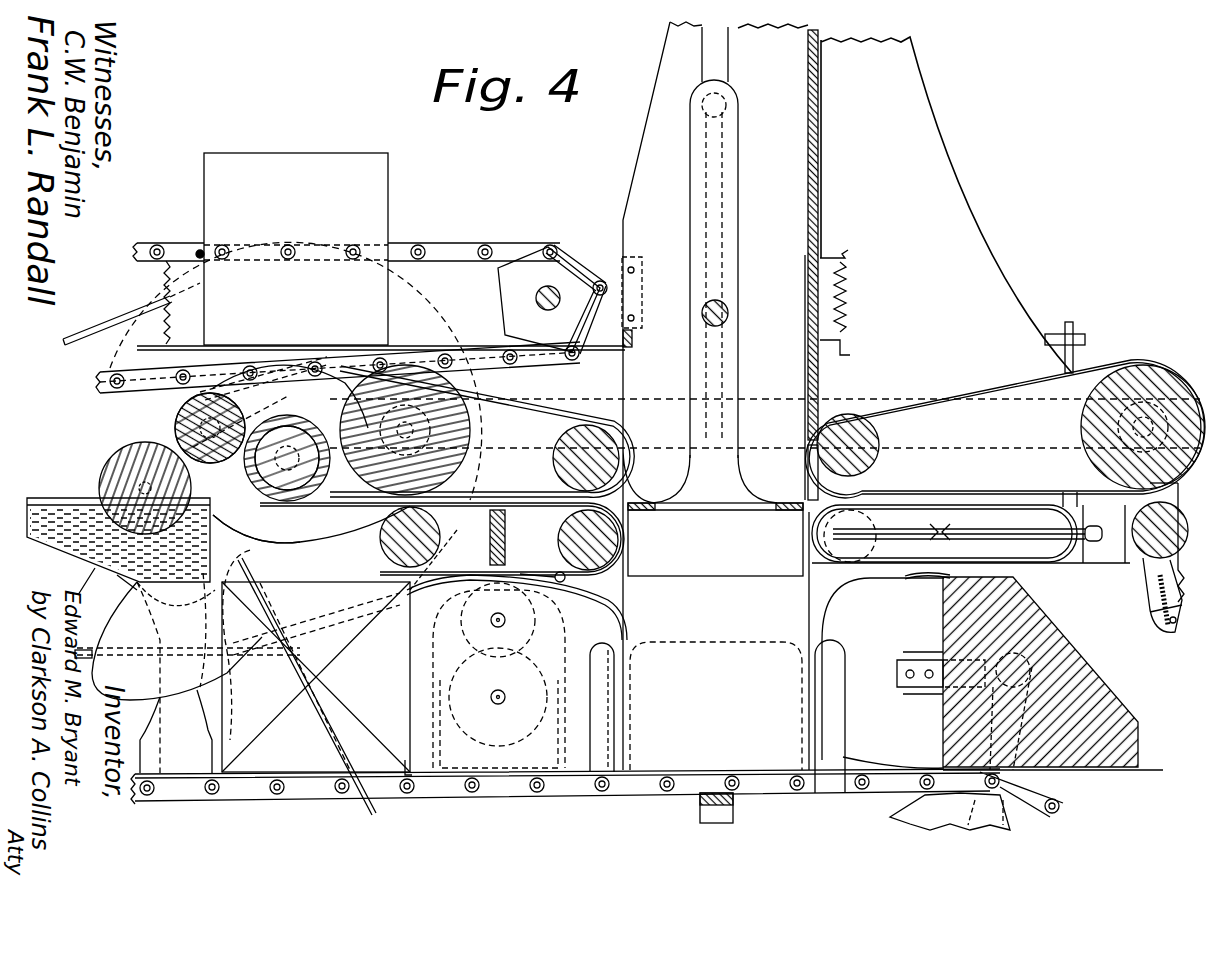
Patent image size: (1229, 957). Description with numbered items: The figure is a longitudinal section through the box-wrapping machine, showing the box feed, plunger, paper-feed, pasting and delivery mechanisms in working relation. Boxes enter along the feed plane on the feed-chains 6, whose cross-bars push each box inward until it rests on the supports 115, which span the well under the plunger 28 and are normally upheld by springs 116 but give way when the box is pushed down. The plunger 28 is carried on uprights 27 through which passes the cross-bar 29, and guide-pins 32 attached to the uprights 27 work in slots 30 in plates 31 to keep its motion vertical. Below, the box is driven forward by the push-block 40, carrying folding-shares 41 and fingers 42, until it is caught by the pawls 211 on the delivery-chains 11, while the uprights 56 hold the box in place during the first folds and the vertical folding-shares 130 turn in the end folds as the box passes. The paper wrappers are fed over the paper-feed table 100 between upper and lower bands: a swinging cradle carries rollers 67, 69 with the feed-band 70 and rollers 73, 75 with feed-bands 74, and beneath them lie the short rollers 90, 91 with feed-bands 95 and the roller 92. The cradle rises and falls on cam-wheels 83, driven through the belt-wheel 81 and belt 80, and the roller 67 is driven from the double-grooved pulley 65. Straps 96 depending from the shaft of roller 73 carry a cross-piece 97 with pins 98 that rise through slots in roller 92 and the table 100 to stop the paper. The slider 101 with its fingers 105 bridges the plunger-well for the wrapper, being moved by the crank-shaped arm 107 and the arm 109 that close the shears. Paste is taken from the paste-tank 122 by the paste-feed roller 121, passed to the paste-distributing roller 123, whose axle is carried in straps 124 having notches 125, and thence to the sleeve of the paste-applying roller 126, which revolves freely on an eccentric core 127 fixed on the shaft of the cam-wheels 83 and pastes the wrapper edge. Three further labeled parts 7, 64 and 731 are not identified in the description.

The feed-chains 6 is at (470, 246).
The link plate 7 is at (552, 299).
The delivery-chains 11 is at (597, 793).
The uprights 27 is at (700, 396).
The plunger 28 is at (718, 636).
The cross-bar 29 is at (729, 311).
The slots 30 is at (699, 52).
The plates 31 is at (754, 244).
The guide-pins 32 is at (712, 108).
The push-block 40 is at (1085, 680).
The folding-shares 41 is at (883, 673).
The fingers 42 is at (905, 576).
The uprights 56 is at (838, 668).
The bar 64 is at (374, 812).
The double-grooved pulley 65 is at (231, 644).
The roller 67 is at (462, 453).
The rollers 69 is at (567, 437).
The feed-band 70 is at (514, 396).
The roller 73 is at (1083, 425).
The feed-bands 74 is at (1013, 393).
The roller 75 is at (878, 440).
The belt 80 is at (146, 320).
The belt-wheel 81 is at (124, 370).
The cam-wheels 83 is at (418, 539).
The short rollers 90 is at (432, 548).
The rollers 91 is at (558, 538).
The roller 92 is at (1132, 540).
The feed-bands 95 is at (570, 574).
The straps 96 is at (1190, 635).
The cross-piece 97 is at (1165, 633).
The pins 98 is at (1152, 573).
The paper-feed table 100 is at (1179, 495).
The bridging slider 101 is at (971, 544).
The fingers 105 is at (1078, 510).
The arm 107 is at (1053, 332).
The arm 109 is at (1075, 360).
The supports 115 is at (764, 354).
The springs 116 is at (842, 318).
The paste-feed roller 121 is at (115, 462).
The paste-tank 122 is at (63, 545).
The paste-distributing roller 123 is at (182, 418).
The straps 124 is at (175, 438).
The notches 125 is at (130, 488).
The paste-applying roller 126 is at (248, 476).
The cylindrical core 127 is at (259, 507).
The vertical folding-shares 130 is at (517, 607).
The pawls 211 is at (421, 756).
The loop guide 731 is at (177, 641).